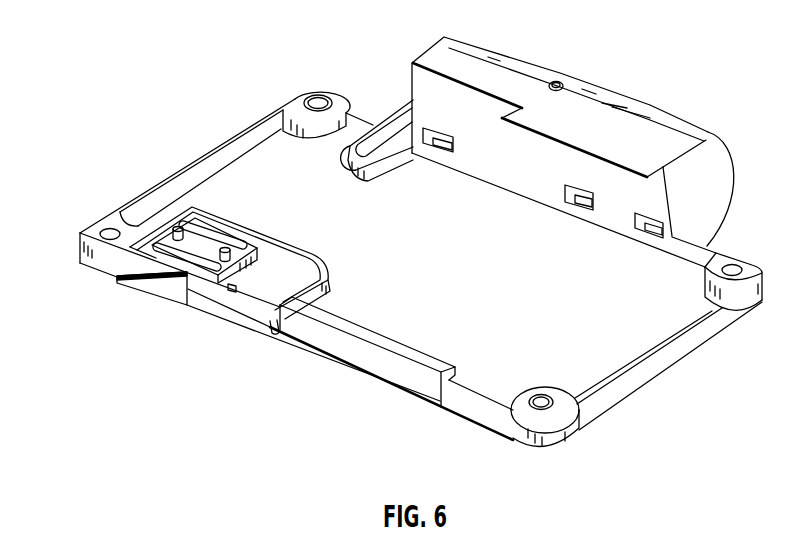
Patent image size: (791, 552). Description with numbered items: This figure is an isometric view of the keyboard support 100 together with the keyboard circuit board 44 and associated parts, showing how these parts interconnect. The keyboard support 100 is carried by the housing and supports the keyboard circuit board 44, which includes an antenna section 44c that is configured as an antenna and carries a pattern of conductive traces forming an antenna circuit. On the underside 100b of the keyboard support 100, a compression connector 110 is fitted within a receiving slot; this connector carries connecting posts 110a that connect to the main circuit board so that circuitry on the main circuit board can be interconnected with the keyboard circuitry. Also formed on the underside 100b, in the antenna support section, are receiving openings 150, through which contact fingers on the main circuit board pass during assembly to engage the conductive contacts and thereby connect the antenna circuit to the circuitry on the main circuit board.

The keyboard support 100 is at (470, 410).
The underside of the keyboard support 100b is at (627, 325).
The keyboard circuit board 44 is at (210, 318).
The antenna section 44c is at (615, 98).
The receiving openings 150 is at (648, 230).
The compression connector 110 is at (203, 243).
The connecting posts 110a is at (172, 245).